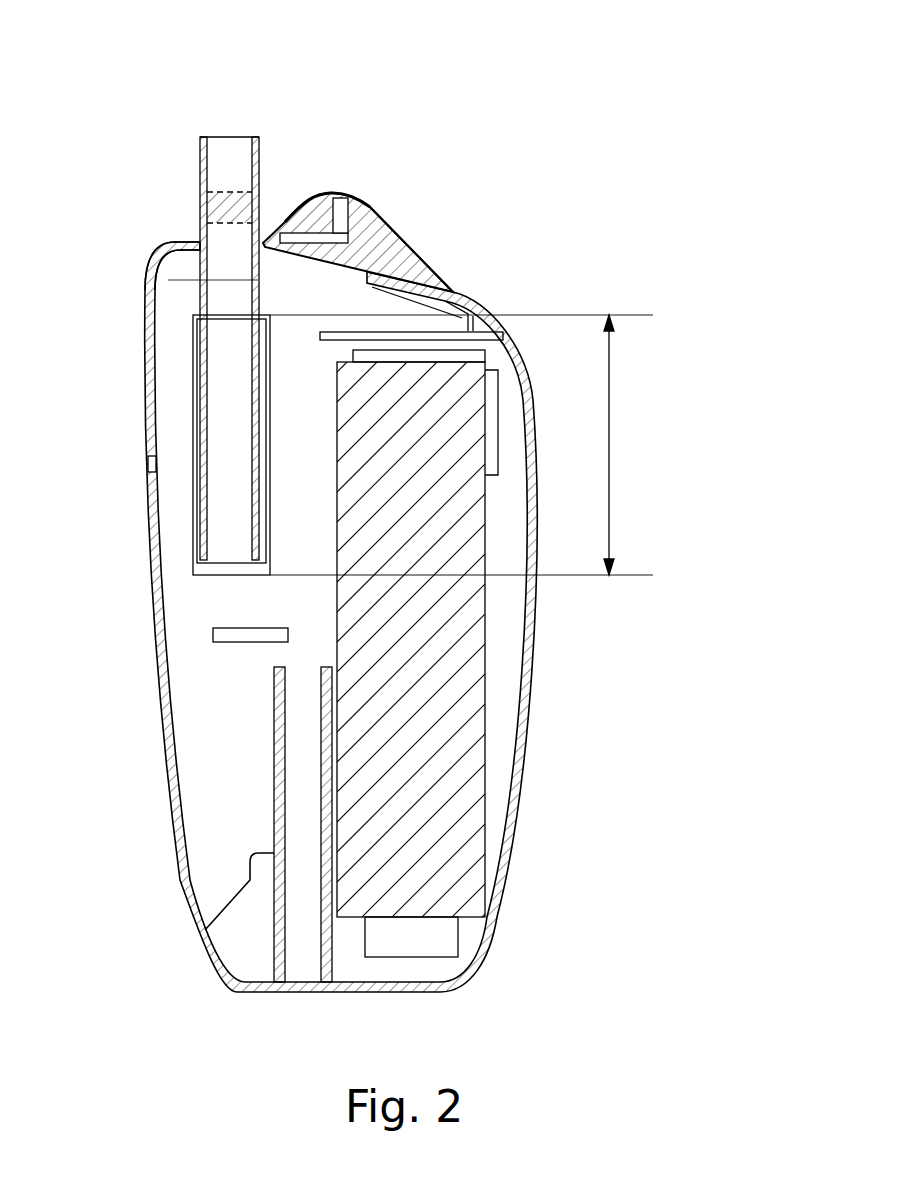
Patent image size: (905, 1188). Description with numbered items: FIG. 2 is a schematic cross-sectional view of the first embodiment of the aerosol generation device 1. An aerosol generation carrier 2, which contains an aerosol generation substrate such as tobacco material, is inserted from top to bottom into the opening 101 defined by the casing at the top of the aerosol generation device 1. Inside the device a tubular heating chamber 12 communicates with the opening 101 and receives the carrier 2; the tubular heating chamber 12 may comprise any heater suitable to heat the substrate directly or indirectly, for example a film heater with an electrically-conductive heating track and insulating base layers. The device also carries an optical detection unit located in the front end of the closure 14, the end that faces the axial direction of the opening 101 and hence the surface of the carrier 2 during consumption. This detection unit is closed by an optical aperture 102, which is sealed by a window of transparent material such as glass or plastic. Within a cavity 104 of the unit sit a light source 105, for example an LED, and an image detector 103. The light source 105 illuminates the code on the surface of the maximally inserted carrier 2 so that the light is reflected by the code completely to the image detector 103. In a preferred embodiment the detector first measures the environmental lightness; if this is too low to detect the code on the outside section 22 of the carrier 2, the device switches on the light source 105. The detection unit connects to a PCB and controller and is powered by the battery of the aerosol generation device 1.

The aerosol generation device 1 is at (535, 640).
The aerosol generation carrier 2 is at (230, 126).
The outside section 22 is at (220, 208).
The tubular heating chamber 12 is at (623, 435).
The closure 14 is at (433, 263).
The opening 101 is at (197, 238).
The optical aperture 102 is at (317, 205).
The image detector 103 is at (343, 238).
The cavity 104 is at (302, 222).
The light source 105 is at (340, 205).